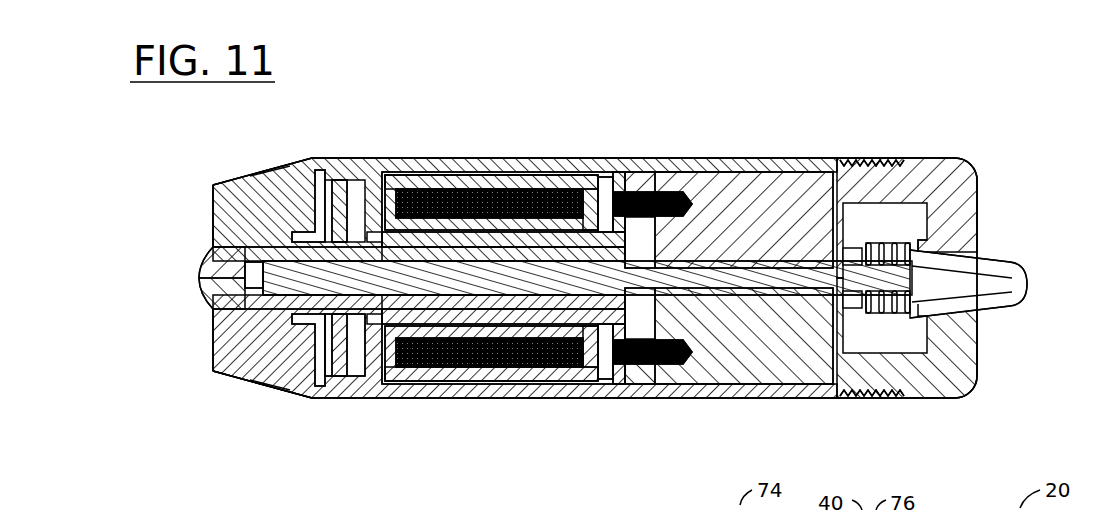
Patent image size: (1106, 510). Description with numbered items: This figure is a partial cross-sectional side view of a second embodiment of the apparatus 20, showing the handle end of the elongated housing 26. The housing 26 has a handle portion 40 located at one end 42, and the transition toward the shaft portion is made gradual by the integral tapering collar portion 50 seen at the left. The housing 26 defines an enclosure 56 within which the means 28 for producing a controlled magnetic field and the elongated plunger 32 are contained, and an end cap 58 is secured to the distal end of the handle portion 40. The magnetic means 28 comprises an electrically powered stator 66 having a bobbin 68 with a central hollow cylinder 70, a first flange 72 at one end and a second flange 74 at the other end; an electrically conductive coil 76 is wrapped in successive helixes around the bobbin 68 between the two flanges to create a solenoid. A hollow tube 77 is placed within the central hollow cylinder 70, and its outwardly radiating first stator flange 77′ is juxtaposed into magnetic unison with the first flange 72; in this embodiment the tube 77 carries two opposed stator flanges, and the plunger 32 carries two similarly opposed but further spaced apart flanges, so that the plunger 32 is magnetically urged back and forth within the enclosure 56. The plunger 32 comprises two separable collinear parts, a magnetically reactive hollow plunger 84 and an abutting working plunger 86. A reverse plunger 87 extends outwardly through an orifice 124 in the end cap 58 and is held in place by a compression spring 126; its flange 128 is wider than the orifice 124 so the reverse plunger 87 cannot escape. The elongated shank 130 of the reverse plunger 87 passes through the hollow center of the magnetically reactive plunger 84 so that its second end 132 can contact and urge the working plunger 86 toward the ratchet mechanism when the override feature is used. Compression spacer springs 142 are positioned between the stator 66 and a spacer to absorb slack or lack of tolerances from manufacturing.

The apparatus 20 is at (684, 106).
The elongated housing 26 is at (263, 389).
The means for producing a controlled magnetic field 28 is at (573, 157).
The elongated plunger 32 is at (233, 187).
The handle portion 40 is at (547, 157).
The end 42 is at (862, 160).
The tapering collar portion 50 is at (300, 157).
The enclosure 56 is at (352, 372).
The end cap 58 is at (977, 167).
The stator 66 is at (453, 157).
The bobbin 68 is at (402, 200).
The central hollow cylinder 70 is at (528, 157).
The first flange 72 is at (592, 157).
The second flange 74 is at (428, 157).
The electrically conductive coil 76 is at (562, 157).
The hollow tube 77 is at (468, 157).
The first stator flange 77′ is at (605, 157).
The magnetically reactive hollow plunger 84 is at (262, 232).
The working plunger 86 is at (205, 260).
The reverse plunger 87 is at (1020, 285).
The orifice 124 is at (985, 249).
The compression spring 126 is at (895, 330).
The flange 128 is at (967, 240).
The elongated shank 130 is at (773, 268).
The second end 132 is at (245, 288).
The compression spacer springs 142 is at (660, 192).